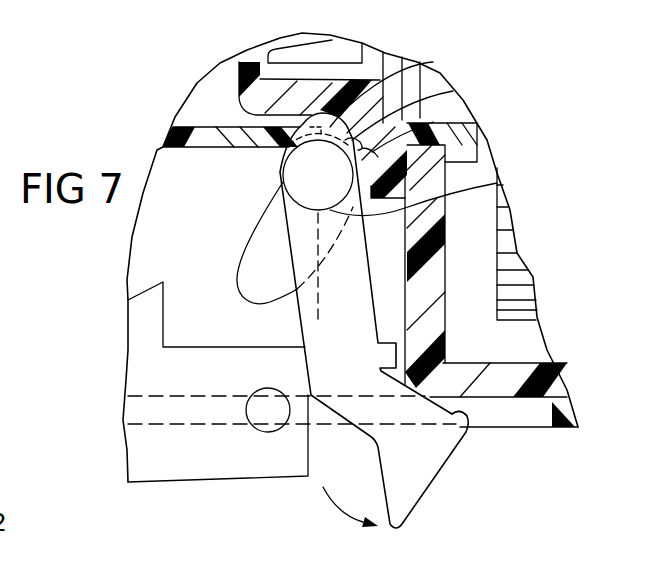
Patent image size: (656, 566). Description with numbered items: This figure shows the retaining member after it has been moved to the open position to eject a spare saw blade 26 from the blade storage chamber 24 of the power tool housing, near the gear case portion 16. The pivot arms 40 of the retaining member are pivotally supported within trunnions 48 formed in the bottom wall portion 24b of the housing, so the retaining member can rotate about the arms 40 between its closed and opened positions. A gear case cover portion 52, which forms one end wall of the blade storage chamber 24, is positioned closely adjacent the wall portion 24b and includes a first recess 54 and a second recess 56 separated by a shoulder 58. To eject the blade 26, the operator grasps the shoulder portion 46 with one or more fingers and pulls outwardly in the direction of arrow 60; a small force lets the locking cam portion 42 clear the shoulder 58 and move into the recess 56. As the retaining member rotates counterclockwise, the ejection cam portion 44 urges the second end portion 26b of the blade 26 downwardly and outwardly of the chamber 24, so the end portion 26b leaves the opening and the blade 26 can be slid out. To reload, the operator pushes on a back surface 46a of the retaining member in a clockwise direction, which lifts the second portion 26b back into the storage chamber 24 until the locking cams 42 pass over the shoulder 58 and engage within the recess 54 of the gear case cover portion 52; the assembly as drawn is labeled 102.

The blade storage chamber 24 is at (166, 233).
The bottom wall portion 24b is at (208, 136).
The spare cutting blade 26 is at (148, 323).
The second end portion 26b is at (250, 468).
The gear case portion 16 is at (571, 432).
The pivot arms 40 is at (497, 183).
The locking cam portion 42 is at (433, 62).
The ejection cam portion 44 is at (238, 288).
The shoulder portion 46 is at (400, 528).
The back surface 46a is at (471, 437).
The trunnions 48 is at (287, 195).
The gear case cover portion 52 is at (424, 349).
The first recess 54 is at (433, 122).
The second recess 56 is at (316, 115).
The shoulder 58 is at (419, 110).
The arrow 60 is at (345, 514).
The assembly 102 is at (82, 397).